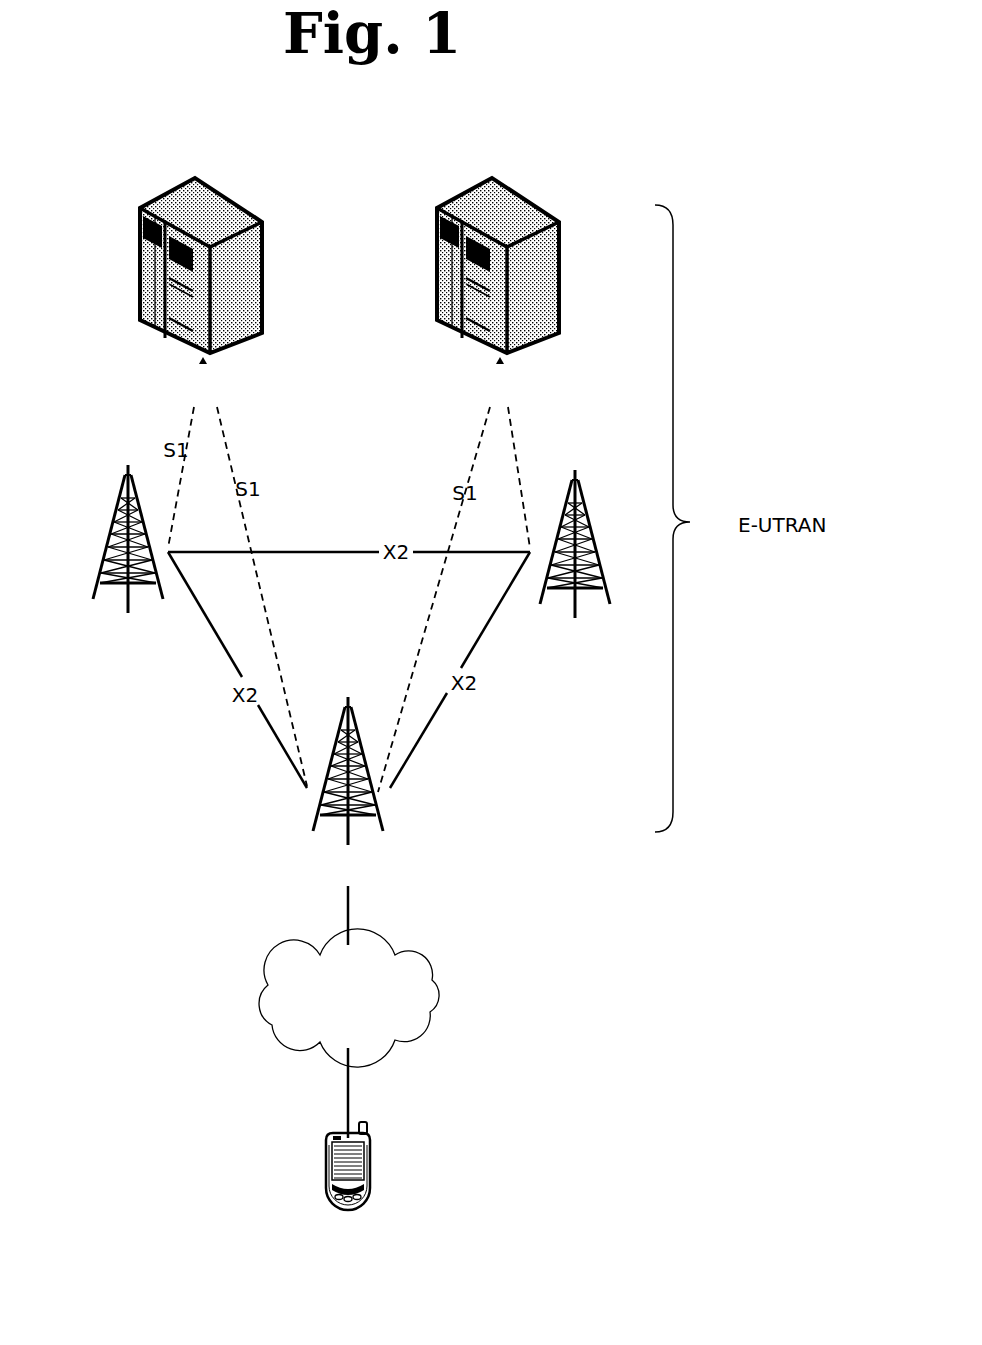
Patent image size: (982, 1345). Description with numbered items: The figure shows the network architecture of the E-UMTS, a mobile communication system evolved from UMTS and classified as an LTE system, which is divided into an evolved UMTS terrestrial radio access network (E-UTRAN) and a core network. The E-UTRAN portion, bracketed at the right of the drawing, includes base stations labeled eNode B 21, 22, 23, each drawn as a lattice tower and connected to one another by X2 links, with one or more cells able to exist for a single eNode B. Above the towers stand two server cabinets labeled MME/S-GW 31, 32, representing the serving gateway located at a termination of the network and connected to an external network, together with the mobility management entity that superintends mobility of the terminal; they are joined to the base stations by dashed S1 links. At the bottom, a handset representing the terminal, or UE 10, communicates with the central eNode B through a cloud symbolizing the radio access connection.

The user equipment (UE) 10 is at (364, 1124).
The eNB (evolved Node B) 21 is at (349, 697).
The eNB (evolved Node B) 22 is at (128, 465).
The eNB (evolved Node B) 23 is at (575, 470).
The MME/S-GW (mobility management entity / serving gateway) 31 is at (197, 177).
The MME/S-GW (mobility management entity / serving gateway) 32 is at (494, 177).